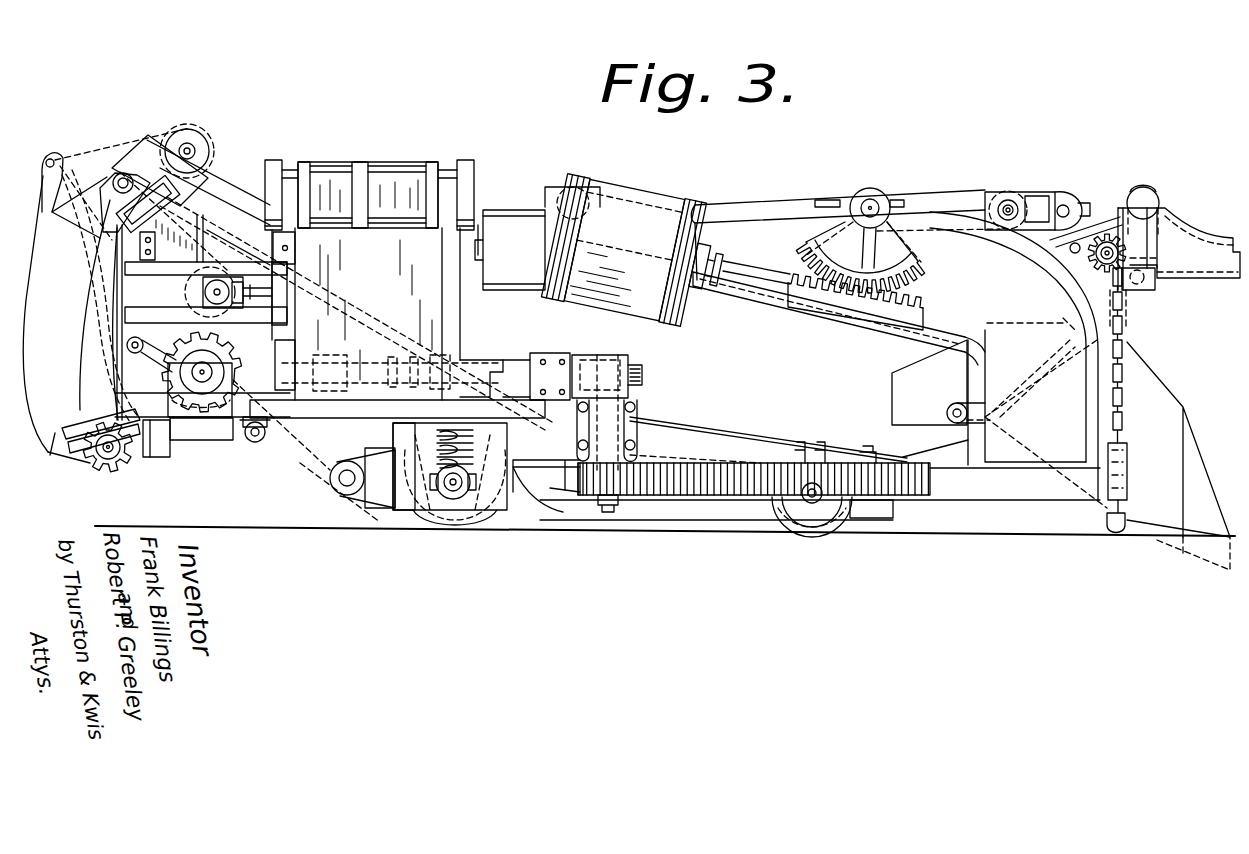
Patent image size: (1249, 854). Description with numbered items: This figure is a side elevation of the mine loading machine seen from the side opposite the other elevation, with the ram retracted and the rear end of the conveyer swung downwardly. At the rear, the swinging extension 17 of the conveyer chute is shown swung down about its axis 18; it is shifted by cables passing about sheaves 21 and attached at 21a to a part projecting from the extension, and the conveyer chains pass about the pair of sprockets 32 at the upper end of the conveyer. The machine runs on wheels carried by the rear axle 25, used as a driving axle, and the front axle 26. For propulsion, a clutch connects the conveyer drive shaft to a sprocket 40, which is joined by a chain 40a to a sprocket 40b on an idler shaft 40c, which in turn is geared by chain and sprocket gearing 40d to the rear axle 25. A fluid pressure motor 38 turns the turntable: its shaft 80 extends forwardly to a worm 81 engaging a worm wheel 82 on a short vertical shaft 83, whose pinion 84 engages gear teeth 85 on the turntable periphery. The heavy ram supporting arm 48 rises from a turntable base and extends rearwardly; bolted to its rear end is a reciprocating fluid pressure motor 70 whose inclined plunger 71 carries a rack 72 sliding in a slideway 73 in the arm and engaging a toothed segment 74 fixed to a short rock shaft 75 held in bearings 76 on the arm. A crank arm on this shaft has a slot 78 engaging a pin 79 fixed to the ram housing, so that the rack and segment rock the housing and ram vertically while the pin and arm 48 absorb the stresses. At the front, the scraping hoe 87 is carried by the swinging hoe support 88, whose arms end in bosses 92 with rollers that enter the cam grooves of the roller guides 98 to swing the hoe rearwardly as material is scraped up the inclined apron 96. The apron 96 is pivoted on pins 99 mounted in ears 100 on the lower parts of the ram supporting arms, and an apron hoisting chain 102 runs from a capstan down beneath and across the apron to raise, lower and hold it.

The swinging extension 17 is at (57, 436).
The axis 18 is at (119, 170).
The sheaves 21 is at (190, 150).
The connection of cables to extension 21a is at (66, 149).
The rear axle 25 is at (450, 488).
The front axle 26 is at (815, 503).
The sprockets 32 is at (104, 466).
The fluid pressure motor 38 is at (402, 190).
The sprocket 40 is at (190, 395).
The chain 40a is at (300, 463).
The sprocket 40b is at (362, 515).
The idler shaft 40c is at (343, 486).
The chain and sprocket gearing 40d is at (395, 530).
The ram supporting arm 48 is at (756, 210).
The reciprocating fluid pressure motor 70 is at (645, 300).
The plunger 71 is at (758, 298).
The rack 72 is at (905, 312).
The slideway 73 is at (832, 308).
The toothed segment 74 is at (905, 250).
The rock shaft 75 is at (872, 204).
The bearings 76 is at (856, 198).
The slot 78 is at (1036, 205).
The pin 79 is at (1008, 205).
The motor shaft 80 is at (481, 367).
The worm 81 is at (620, 360).
The worm wheel 82 is at (642, 376).
The vertical shaft 83 is at (607, 514).
The pinion 84 is at (590, 482).
The gear teeth 85 is at (690, 487).
The scraping hoe 87 is at (1046, 413).
The swinging hoe support 88 is at (1128, 300).
The bosses 92 is at (1152, 202).
The inclined apron 96 is at (1183, 407).
The roller guides 98 is at (1175, 232).
The pins 99 is at (953, 405).
The ears 100 is at (955, 415).
The apron hoisting chain 102 is at (1121, 340).